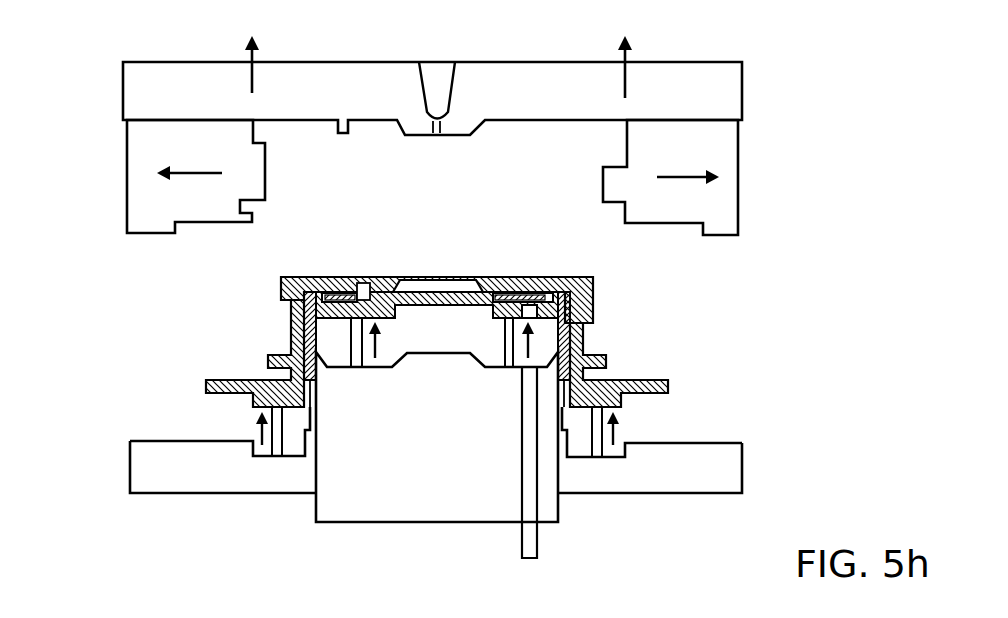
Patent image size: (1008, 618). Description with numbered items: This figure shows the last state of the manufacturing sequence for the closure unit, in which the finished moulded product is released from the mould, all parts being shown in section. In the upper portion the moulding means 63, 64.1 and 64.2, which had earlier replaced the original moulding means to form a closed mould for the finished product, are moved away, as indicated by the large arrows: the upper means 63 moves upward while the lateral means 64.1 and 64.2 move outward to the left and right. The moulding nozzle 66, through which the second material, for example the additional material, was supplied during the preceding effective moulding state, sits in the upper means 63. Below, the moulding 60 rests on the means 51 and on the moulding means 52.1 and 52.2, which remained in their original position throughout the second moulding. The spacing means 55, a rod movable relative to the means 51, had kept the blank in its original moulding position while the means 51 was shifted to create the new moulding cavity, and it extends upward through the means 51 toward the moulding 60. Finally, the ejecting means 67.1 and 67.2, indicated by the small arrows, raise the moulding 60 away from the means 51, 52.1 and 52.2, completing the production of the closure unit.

The moulding means 63 is at (135, 80).
The moulding nozzle 66 is at (448, 82).
The moulding means 64.1 is at (142, 143).
The moulding means 64.2 is at (727, 145).
The moulding 60 is at (368, 265).
The means 51 is at (370, 512).
The spacing means 55 is at (530, 540).
The ejecting means 67.1 is at (278, 418).
The ejecting means 67.2 is at (505, 350).
The moulding means 52.1 is at (145, 460).
The moulding means 52.2 is at (696, 450).